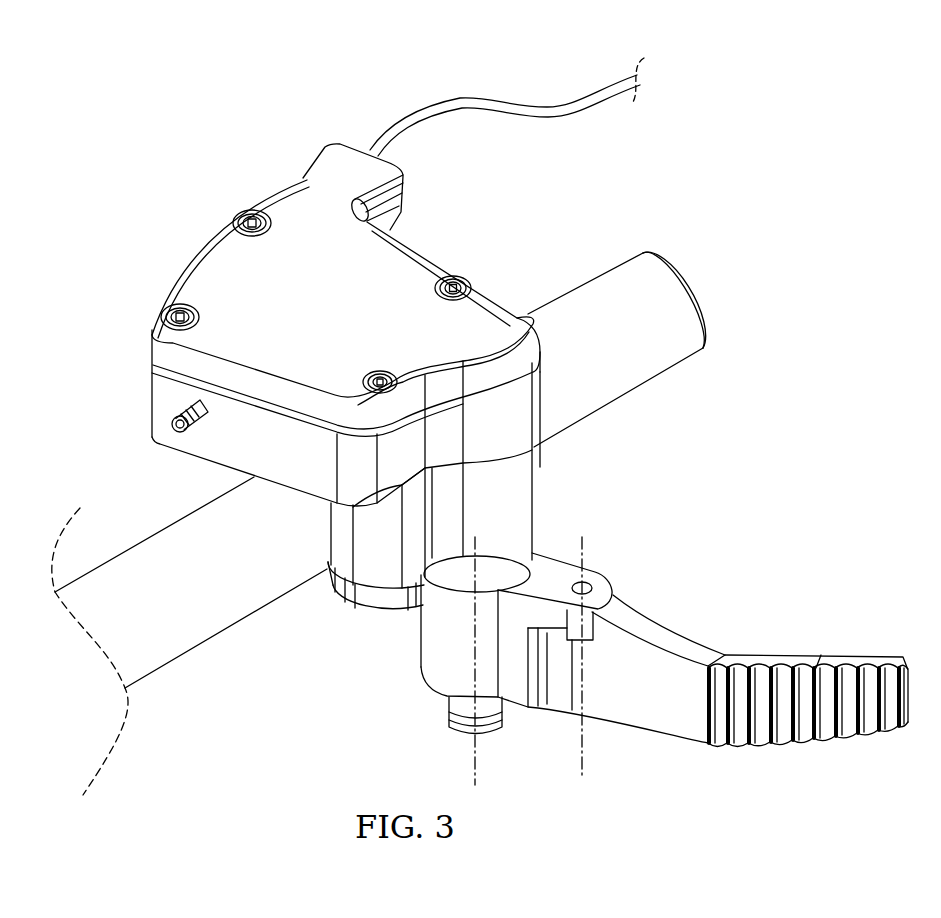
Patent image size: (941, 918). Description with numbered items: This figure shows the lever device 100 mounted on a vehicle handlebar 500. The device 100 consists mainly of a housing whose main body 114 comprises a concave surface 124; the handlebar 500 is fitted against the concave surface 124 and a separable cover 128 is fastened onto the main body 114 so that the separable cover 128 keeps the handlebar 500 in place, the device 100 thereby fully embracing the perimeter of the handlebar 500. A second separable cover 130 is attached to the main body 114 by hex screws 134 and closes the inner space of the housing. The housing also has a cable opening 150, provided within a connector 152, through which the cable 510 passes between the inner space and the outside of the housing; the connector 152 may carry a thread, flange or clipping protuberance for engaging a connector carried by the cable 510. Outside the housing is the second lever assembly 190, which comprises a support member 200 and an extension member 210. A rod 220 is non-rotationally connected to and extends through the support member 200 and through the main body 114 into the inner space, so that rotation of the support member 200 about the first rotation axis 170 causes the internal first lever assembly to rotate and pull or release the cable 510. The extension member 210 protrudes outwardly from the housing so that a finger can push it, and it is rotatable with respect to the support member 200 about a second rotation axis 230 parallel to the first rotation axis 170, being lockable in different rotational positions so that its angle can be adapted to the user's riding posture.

The lever device 100 is at (176, 228).
The main body 114 is at (517, 482).
The concave surface 124 is at (323, 513).
The separable cover 128 is at (368, 612).
The second separable cover 130 is at (398, 265).
The hex screws 134 is at (250, 212).
The cable opening 150 is at (385, 157).
The connector 152 is at (333, 173).
The first rotation axis 170 is at (478, 768).
The second lever assembly 190 is at (664, 653).
The support member 200 is at (550, 575).
The extension member 210 is at (755, 660).
The rod 220 is at (465, 710).
The second rotation axis 230 is at (585, 763).
The handlebar 500 is at (125, 548).
The cable 510 is at (533, 107).